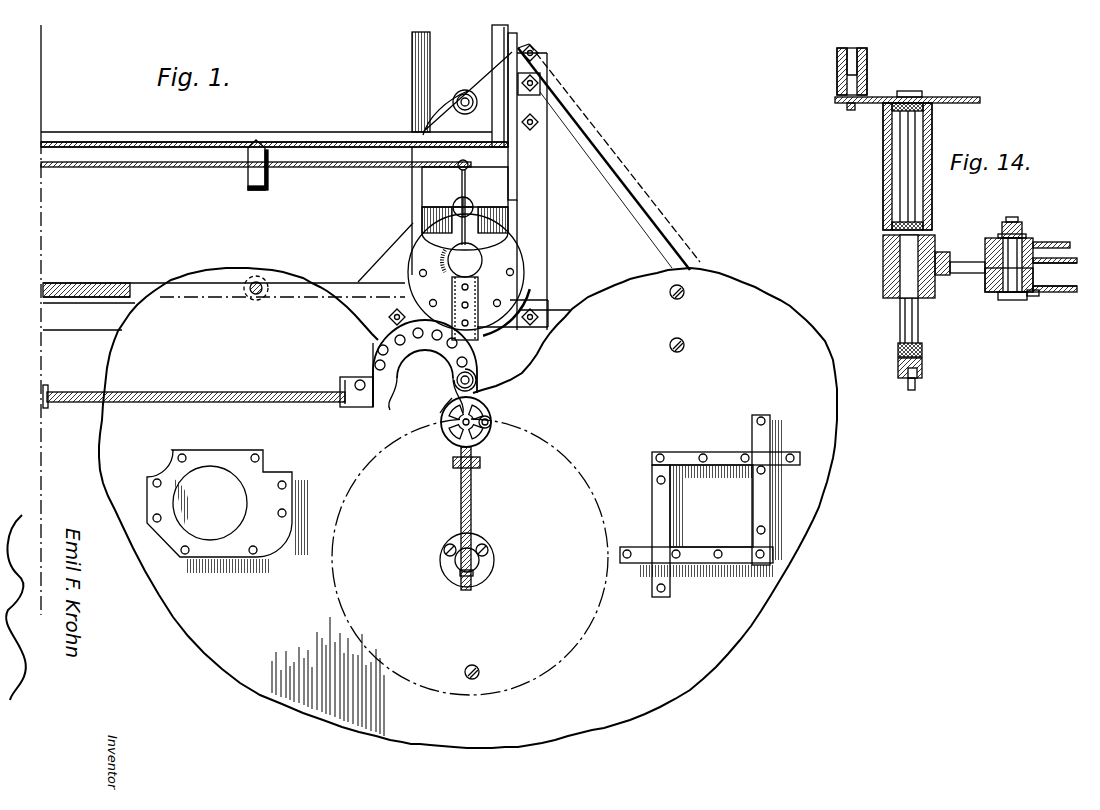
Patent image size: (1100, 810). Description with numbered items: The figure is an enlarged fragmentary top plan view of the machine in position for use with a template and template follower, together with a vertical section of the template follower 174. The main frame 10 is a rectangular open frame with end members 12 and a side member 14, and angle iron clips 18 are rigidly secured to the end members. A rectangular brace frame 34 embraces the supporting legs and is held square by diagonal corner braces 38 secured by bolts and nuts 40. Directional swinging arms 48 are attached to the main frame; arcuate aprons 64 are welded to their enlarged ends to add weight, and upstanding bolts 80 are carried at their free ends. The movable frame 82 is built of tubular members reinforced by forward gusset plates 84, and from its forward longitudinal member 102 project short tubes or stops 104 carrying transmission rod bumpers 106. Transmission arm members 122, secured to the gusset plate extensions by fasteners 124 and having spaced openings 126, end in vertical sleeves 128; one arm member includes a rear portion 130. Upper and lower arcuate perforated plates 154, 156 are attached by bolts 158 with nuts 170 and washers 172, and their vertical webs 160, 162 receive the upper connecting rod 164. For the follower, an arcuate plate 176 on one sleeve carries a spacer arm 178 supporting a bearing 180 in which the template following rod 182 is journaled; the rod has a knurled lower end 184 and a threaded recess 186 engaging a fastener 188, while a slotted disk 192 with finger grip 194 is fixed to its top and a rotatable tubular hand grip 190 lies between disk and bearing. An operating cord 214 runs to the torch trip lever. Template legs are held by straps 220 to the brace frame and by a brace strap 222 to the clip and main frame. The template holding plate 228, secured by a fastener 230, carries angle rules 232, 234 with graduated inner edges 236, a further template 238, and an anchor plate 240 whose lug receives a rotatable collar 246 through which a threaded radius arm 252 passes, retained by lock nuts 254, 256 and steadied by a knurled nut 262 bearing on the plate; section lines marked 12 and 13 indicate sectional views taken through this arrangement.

In FIG. 1, the frame 10 is at (90, 271).
In FIG. 1, the end members 12 is at (477, 400).
In FIG. 1, the section line 13- 13 is at (726, 546).
In FIG. 1, the side member 14 is at (137, 283).
In FIG. 1, the angle iron clips 18 is at (543, 78).
In FIG. 1, the brace frame 34 is at (537, 226).
In FIG. 1, the diagonal corner braces 38 is at (385, 263).
In FIG. 1, the bolts and nuts 40 is at (538, 121).
In FIG. 1, the directional swinging arms 48 is at (515, 262).
In FIG. 1, the arcuate aprons 64 is at (540, 292).
In FIG. 1, the upstanding bolts 80 is at (465, 98).
In FIG. 1, the movable frame 82 is at (492, 42).
In FIG. 1, the forward gusset plates 84 is at (440, 110).
In FIG. 1, the forward longitudinal member 102 is at (300, 132).
In FIG. 1, the short tubes or stops 104 is at (270, 172).
In FIG. 1, the transmission rod bumpers 106 is at (258, 192).
In FIG. 1, the transmission arm members 122 is at (473, 344).
In FIG. 14, the transmission arm members 122 is at (1056, 290).
In FIG. 1, the fasteners 124 is at (470, 203).
In FIG. 1, the spaced openings 126 is at (460, 300).
In FIG. 14, the sleeves or bosses 128 is at (985, 287).
In FIG. 1, the rear portion or flat plates 130 is at (422, 192).
In FIG. 1, the upper arcuate perforated plate 154 is at (440, 411).
In FIG. 14, the upper arcuate perforated plate 154 is at (1042, 243).
In FIG. 14, the lower arcuate perforated plate 156 is at (1040, 296).
In FIG. 14, the bolts 158 is at (1005, 300).
In FIG. 1, the vertical web 160 is at (372, 350).
In FIG. 1, the vertical web 162 is at (340, 388).
In FIG. 1, the upper connecting rod 164 is at (177, 393).
In FIG. 14, the nuts 170 is at (1023, 227).
In FIG. 14, the washers 172 is at (1000, 234).
In FIG. 14, the template follower 174 is at (874, 208).
In FIG. 14, the arcuate plate 176 is at (985, 258).
In FIG. 14, the arm or spacer 178 is at (966, 273).
In FIG. 14, the bearing 180 is at (882, 270).
In FIG. 14, the template following rod 182 is at (900, 305).
In FIG. 14, the knurled lower end 184 is at (897, 351).
In FIG. 14, the internally threaded recess 186 is at (922, 372).
In FIG. 14, the fastener 188 is at (910, 390).
In FIG. 14, the tubular hand grip 190 is at (882, 168).
In FIG. 1, the slotted disk 192 is at (452, 438).
In FIG. 14, the slotted disk 192 is at (955, 98).
In FIG. 1, the finger grip 194 is at (492, 422).
In FIG. 14, the finger grip 194 is at (868, 60).
In FIG. 1, the operating cord 214 is at (182, 167).
In FIG. 1, the links or straps 220 is at (592, 138).
In FIG. 1, the brace member or strap 222 is at (575, 172).
In FIG. 1, the template holding plate 228 is at (724, 633).
In FIG. 1, the fastener 230 is at (260, 281).
In FIG. 1, the angle rule 232 is at (687, 452).
In FIG. 1, the angle rule 234 is at (766, 500).
In FIG. 1, the graduated inner edges 236 is at (657, 484).
In FIG. 1, the template 238 is at (273, 478).
In FIG. 1, the anchor plate 240 is at (490, 566).
In FIG. 1, the collar 246 is at (483, 554).
In FIG. 1, the threaded radius arm 252 is at (472, 500).
In FIG. 1, the lock nut 254 is at (458, 573).
In FIG. 1, the lock nut 256 is at (458, 545).
In FIG. 1, the knurled surface nut 262 is at (481, 468).